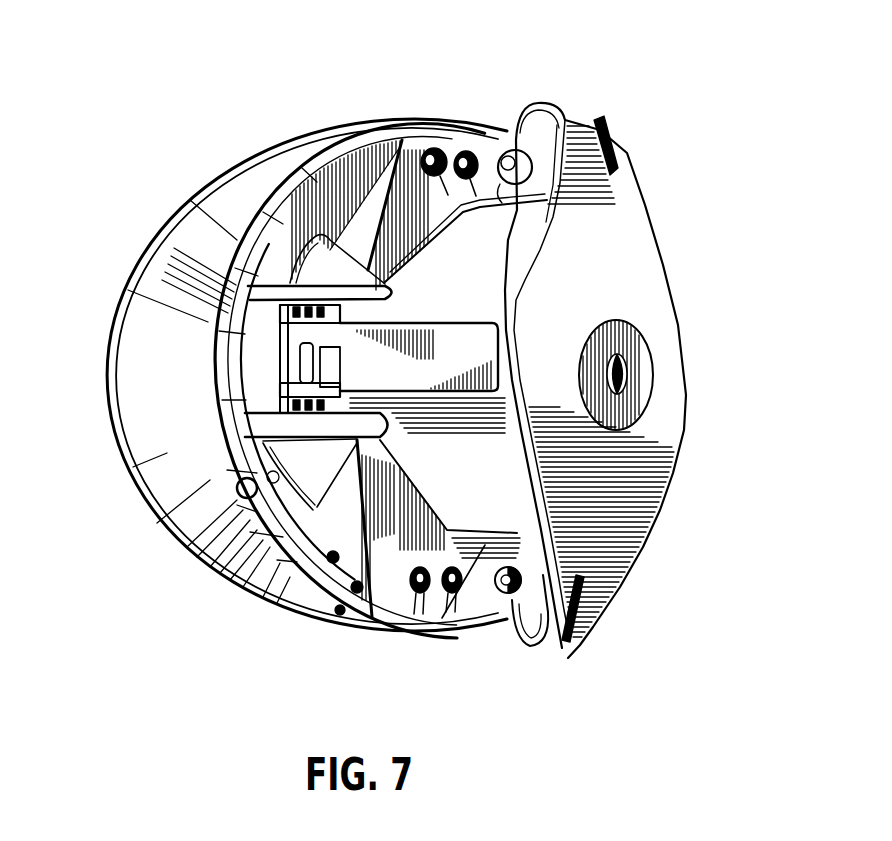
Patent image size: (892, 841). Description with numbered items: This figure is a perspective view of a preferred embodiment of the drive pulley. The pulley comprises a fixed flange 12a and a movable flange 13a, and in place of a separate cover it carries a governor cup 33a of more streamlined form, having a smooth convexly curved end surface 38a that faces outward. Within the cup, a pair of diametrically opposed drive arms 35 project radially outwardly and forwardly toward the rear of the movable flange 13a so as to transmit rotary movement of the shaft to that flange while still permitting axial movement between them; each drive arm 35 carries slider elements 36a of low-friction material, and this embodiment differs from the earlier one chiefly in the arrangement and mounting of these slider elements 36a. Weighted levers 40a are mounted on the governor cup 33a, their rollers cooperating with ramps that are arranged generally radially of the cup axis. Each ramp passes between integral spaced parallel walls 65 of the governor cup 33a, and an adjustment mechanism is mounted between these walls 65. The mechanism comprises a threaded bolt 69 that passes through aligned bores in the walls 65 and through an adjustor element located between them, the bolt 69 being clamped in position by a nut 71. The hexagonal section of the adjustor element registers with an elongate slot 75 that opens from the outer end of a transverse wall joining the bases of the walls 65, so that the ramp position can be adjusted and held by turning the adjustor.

The fixed flange 12a is at (130, 267).
The movable flange 13a is at (340, 140).
The governor cup 33a is at (636, 210).
The drive arm 35 is at (283, 358).
The slider element 36a is at (327, 398).
The convexly curved end surface 38a is at (648, 252).
The weighted lever 40a is at (456, 122).
The spaced parallel wall 65 is at (562, 72).
The threaded bolt 69 is at (510, 600).
The nut 71 is at (520, 133).
The elongate slot 75 is at (613, 138).